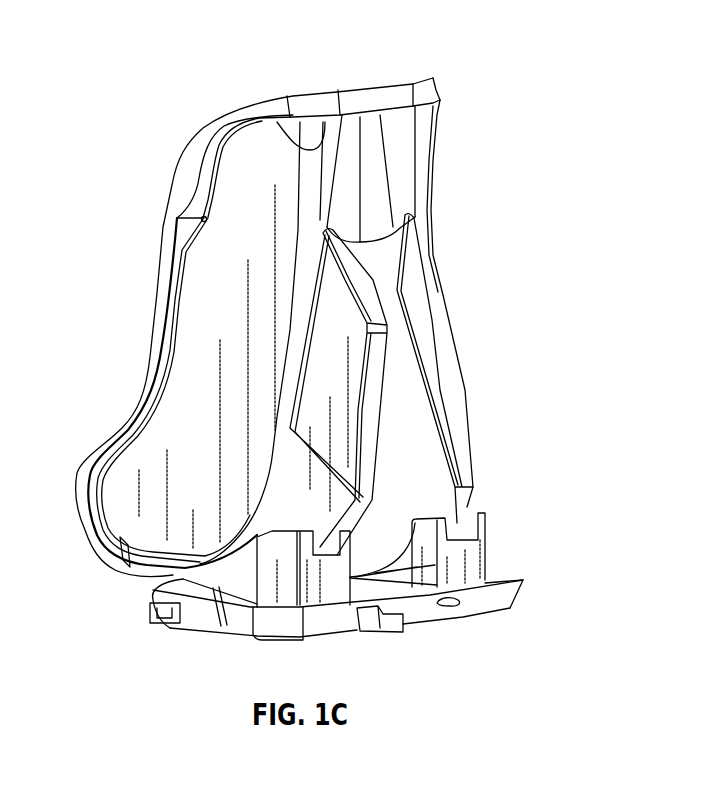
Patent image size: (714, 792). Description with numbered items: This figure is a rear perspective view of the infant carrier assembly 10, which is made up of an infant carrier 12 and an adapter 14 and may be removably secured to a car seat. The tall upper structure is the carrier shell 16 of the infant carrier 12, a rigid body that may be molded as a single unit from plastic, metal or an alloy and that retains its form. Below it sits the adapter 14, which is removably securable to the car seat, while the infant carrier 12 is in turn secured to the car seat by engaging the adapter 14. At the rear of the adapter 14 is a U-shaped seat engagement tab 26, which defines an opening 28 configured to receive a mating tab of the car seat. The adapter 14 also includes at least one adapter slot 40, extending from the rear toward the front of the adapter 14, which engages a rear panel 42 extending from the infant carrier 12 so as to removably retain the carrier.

The infant carrier assembly 10 is at (133, 232).
The infant carrier 12 is at (445, 265).
The adapter 14 is at (498, 565).
The carrier shell 16 is at (430, 190).
The seat engagement tab 26 is at (417, 623).
The opening 28 is at (432, 604).
The adapter slot 40 is at (472, 530).
The rear panel 42 is at (458, 400).